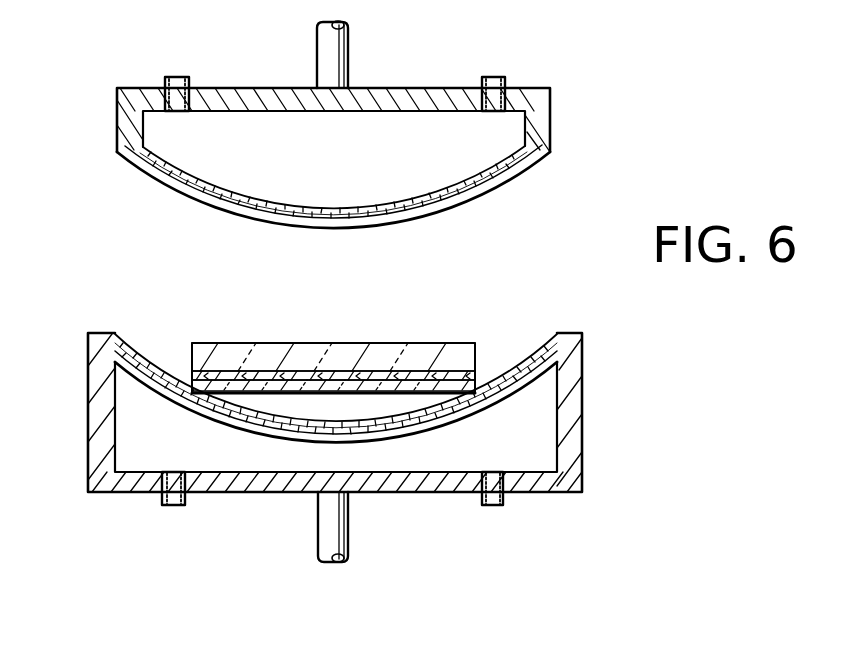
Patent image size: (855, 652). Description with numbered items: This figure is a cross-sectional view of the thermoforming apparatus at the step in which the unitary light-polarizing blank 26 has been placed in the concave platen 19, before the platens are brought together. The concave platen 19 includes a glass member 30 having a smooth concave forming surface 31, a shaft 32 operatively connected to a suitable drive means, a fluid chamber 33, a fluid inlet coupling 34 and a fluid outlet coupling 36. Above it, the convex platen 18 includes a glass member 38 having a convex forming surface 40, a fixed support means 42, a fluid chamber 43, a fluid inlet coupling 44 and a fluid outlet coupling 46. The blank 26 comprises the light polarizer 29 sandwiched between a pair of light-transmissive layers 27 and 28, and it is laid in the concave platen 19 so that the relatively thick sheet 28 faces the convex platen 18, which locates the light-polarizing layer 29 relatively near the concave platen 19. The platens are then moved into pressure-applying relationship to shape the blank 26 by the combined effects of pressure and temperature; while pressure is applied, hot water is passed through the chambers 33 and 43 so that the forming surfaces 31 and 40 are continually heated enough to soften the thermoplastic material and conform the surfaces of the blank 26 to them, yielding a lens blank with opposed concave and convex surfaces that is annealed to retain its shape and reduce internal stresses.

The convex platen 18 is at (104, 130).
The fluid outlet coupling 46 is at (177, 77).
The fixed support means 42 is at (333, 47).
The fluid inlet coupling 44 is at (495, 77).
The fluid chamber 43 is at (502, 123).
The glass member 38 is at (522, 170).
The convex forming surface 40 is at (484, 192).
The concave platen 19 is at (80, 417).
The concave forming surface 31 is at (118, 346).
The glass member 30 is at (148, 366).
The unitary light-polarizing blank 26 is at (340, 300).
The light-transmissive layer 28 is at (477, 353).
The light polarizer 29 is at (481, 375).
The light-transmissive layer 27 is at (478, 389).
The fluid chamber 33 is at (533, 408).
The fluid outlet coupling 36 is at (187, 496).
The fluid inlet coupling 34 is at (504, 497).
The shaft 32 is at (349, 527).